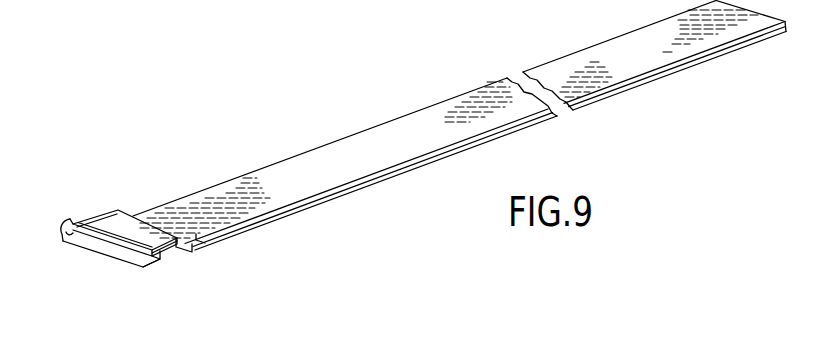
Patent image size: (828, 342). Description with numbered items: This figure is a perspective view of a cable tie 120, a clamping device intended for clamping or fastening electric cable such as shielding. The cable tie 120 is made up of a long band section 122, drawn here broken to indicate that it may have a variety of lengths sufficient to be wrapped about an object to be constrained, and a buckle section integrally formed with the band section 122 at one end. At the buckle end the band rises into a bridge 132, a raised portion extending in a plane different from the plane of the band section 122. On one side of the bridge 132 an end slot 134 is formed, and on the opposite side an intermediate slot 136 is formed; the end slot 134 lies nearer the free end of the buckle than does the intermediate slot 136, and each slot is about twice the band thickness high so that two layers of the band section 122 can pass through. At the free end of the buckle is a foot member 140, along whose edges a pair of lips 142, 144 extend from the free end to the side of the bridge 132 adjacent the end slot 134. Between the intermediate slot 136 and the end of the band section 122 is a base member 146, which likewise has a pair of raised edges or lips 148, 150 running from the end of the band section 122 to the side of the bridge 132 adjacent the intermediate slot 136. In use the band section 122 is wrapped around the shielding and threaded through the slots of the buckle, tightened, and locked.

The cable tie 120 is at (415, 103).
The band section 122 is at (638, 33).
The bridge 132 is at (93, 218).
The end slot 134 is at (160, 252).
The intermediate slot 136 is at (182, 252).
The foot member 140 is at (115, 260).
The lip 142 is at (131, 253).
The lip 144 is at (62, 233).
The base member 146 is at (166, 228).
The lip 148 is at (203, 237).
The lip 150 is at (118, 207).